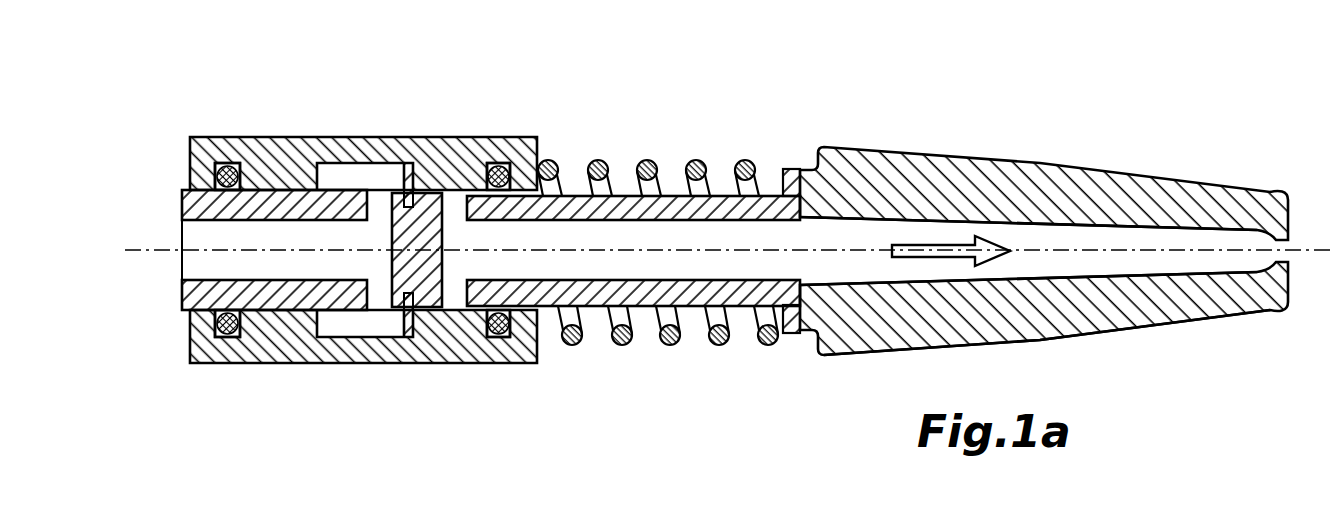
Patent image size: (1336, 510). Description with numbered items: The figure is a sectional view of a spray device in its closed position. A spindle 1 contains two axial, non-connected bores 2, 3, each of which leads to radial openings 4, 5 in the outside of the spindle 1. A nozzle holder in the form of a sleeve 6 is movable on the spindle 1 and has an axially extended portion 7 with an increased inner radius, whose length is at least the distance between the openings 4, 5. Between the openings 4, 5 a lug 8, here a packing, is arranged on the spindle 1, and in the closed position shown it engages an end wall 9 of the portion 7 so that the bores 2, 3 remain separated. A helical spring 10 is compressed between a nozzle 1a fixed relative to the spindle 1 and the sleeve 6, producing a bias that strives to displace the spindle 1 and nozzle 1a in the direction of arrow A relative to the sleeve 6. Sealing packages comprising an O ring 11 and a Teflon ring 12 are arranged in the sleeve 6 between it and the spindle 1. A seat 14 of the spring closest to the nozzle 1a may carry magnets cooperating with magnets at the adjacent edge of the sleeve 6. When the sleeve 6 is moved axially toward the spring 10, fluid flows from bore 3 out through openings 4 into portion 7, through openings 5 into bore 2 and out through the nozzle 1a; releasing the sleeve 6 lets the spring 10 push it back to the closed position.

The spindle 1 is at (808, 193).
The nozzle 1a is at (1095, 332).
The bore 2 is at (783, 242).
The bore 3 is at (184, 236).
The openings 4 is at (392, 200).
The openings 5 is at (470, 200).
The sleeve 6 is at (262, 160).
The axially extended portion with an increased inner radius 7 is at (326, 162).
The lug 8 is at (406, 190).
The end wall 9 is at (410, 165).
The helical spring 10 is at (745, 160).
The O ring 11 is at (236, 165).
The Teflon ring 12 is at (214, 184).
The seat 14 is at (792, 168).
The arrow A is at (928, 247).